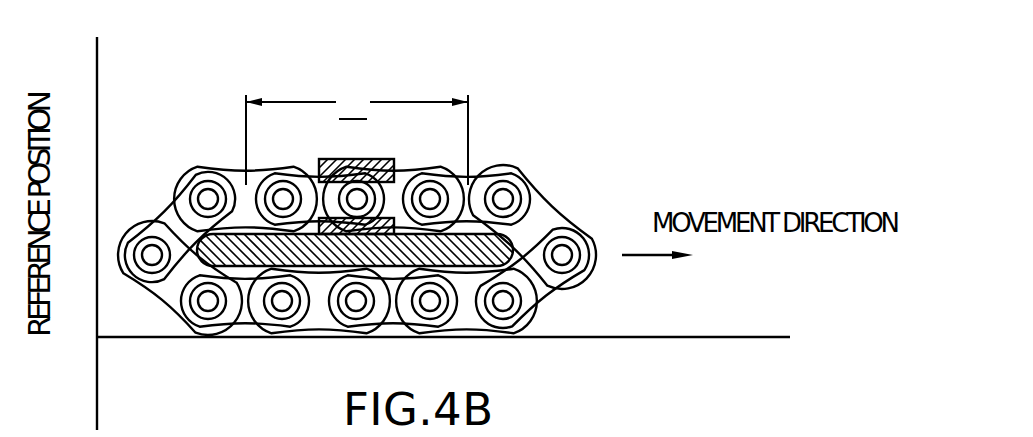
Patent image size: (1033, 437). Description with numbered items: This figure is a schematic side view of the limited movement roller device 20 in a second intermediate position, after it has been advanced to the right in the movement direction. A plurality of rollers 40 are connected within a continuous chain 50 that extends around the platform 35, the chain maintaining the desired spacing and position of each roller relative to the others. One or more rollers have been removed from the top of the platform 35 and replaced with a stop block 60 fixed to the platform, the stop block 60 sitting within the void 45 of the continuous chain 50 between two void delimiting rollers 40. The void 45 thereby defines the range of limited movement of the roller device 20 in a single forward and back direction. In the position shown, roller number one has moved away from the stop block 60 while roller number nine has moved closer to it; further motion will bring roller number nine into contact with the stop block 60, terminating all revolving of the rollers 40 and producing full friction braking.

The limited movement roller device 20 is at (506, 146).
The platform 35 is at (325, 257).
The rollers 40 is at (590, 277).
The void 45 is at (357, 138).
The continuous chain 50 is at (537, 230).
The stop block 60 is at (378, 159).